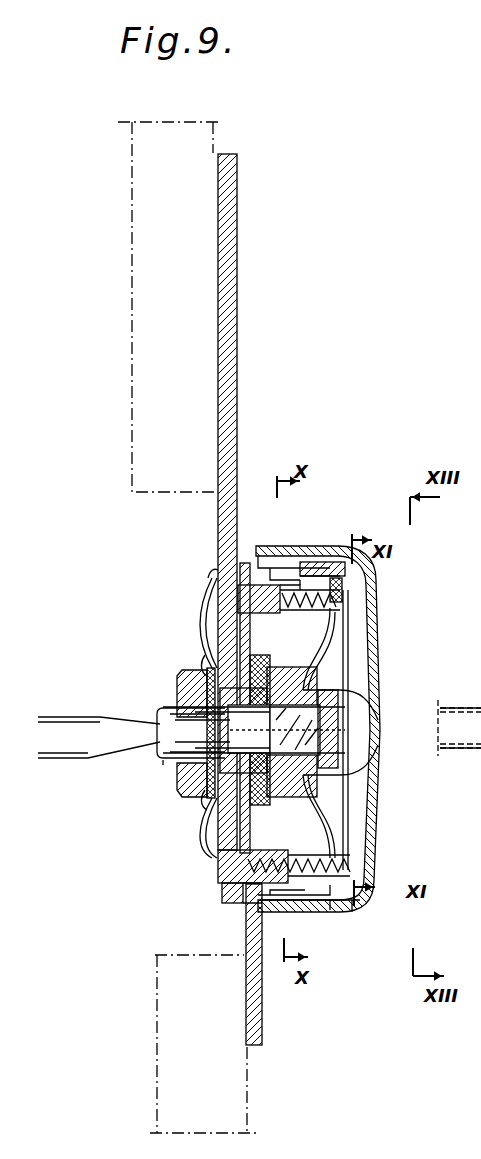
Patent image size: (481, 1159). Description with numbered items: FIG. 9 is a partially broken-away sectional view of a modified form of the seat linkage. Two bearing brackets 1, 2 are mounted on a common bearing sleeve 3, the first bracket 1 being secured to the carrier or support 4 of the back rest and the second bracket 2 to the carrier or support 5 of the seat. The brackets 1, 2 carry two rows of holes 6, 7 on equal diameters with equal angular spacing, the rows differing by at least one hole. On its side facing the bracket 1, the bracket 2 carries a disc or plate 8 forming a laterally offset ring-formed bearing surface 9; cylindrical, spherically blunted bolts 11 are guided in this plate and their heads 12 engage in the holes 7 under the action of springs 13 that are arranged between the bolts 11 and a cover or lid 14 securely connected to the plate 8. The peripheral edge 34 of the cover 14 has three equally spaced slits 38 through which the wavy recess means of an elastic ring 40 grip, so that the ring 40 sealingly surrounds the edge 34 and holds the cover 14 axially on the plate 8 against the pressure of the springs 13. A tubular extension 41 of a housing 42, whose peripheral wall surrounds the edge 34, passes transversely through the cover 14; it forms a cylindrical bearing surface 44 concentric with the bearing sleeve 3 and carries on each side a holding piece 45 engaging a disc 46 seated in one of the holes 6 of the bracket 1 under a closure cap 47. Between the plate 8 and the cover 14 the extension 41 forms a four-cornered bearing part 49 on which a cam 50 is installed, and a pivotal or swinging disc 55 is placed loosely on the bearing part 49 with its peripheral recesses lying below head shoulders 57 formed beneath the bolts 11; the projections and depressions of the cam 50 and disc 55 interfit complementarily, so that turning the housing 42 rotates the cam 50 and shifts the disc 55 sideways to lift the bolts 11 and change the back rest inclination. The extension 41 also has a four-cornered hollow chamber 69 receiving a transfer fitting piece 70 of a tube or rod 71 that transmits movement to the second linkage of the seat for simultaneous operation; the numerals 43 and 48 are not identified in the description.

The bearing bracket 1 is at (226, 265).
The bearing bracket 2 is at (262, 1038).
The bearing sleeve 3 is at (217, 759).
The carrier or support of the back rest 4 is at (132, 377).
The carrier or support of the seat 5 is at (156, 1025).
The row of holes 6 is at (230, 876).
The row of holes 7 is at (256, 886).
The disc or plate 8 is at (222, 630).
The ring-formed bearing surface 9 is at (216, 808).
The studs or bolts 11 is at (236, 975).
The heads 12 is at (230, 863).
The springs 13 is at (332, 870).
The cover or lid 14 is at (353, 908).
The peripheral edge 34 is at (338, 910).
The slits 38 is at (292, 560).
The elastic ring or annular member 40 is at (287, 925).
The tubular-formed extension 41 is at (164, 766).
The housing 42 is at (378, 640).
The bottom cover 43 is at (310, 906).
The cylindrical bearing surface 44 is at (186, 698).
The holding piece 45 is at (200, 682).
The disc 46 is at (212, 661).
The closure cap 47 is at (210, 580).
The cup 48 is at (332, 826).
The four-cornered bearing part 49 is at (340, 732).
The cam 50 is at (346, 770).
The pivotal or swinging disc 55 is at (330, 632).
The head shoulders 57 is at (346, 590).
The hollow space or chamber means 69 is at (170, 712).
The transfer or transitional fitting piece 70 is at (160, 746).
The tube or rod 71 is at (455, 706).